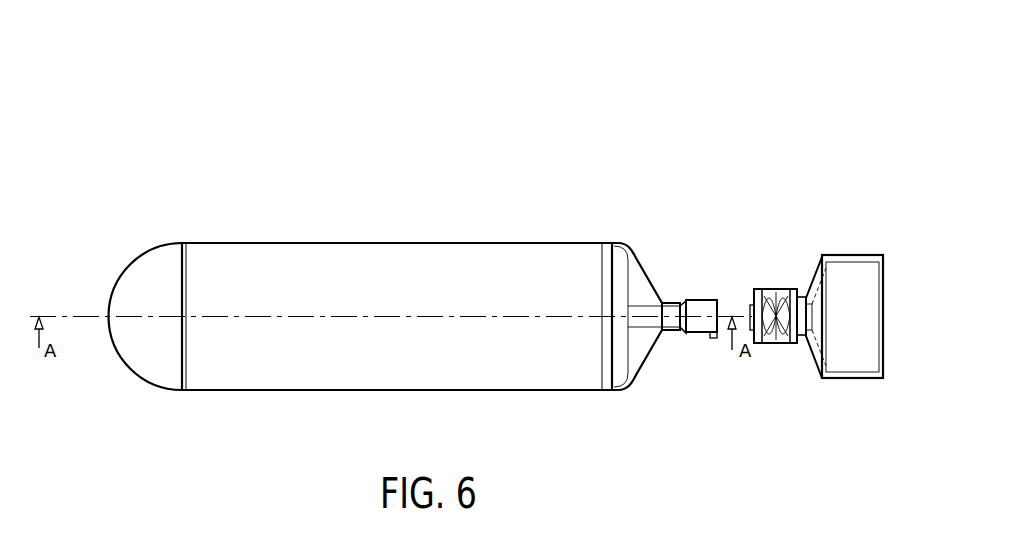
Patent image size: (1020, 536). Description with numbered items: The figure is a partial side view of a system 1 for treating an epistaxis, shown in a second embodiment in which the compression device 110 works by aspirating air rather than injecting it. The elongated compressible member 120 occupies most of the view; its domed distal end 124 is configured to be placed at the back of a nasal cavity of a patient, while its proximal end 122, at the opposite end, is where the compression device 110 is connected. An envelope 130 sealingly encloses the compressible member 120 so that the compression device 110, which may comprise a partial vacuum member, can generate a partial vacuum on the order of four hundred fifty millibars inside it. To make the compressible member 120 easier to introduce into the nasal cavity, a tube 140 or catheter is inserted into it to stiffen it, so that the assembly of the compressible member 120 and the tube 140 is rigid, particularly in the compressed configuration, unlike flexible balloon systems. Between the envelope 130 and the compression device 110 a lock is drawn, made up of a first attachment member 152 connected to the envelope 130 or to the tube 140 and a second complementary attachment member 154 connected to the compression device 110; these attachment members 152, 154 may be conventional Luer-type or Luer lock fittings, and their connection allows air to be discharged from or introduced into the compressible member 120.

The system for treating an epistaxis 1 is at (775, 123).
The compression device 110 is at (860, 268).
The compressible member 120 is at (520, 262).
The proximal end 122 is at (605, 377).
The distal end 124 is at (152, 360).
The envelope 130 is at (648, 287).
The tube 140 is at (642, 320).
The first attachment member 152 is at (695, 334).
The second complementary attachment member 154 is at (772, 290).